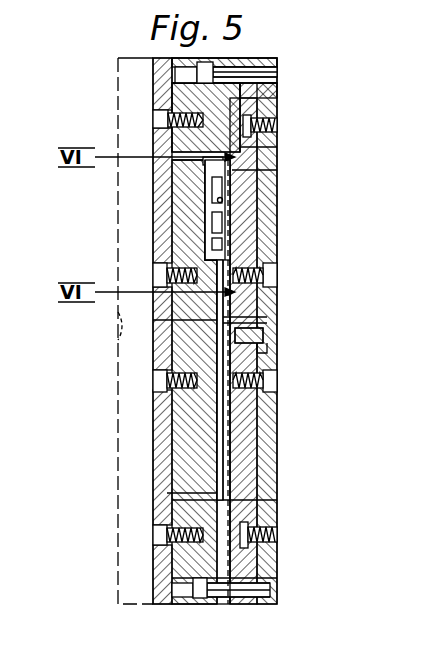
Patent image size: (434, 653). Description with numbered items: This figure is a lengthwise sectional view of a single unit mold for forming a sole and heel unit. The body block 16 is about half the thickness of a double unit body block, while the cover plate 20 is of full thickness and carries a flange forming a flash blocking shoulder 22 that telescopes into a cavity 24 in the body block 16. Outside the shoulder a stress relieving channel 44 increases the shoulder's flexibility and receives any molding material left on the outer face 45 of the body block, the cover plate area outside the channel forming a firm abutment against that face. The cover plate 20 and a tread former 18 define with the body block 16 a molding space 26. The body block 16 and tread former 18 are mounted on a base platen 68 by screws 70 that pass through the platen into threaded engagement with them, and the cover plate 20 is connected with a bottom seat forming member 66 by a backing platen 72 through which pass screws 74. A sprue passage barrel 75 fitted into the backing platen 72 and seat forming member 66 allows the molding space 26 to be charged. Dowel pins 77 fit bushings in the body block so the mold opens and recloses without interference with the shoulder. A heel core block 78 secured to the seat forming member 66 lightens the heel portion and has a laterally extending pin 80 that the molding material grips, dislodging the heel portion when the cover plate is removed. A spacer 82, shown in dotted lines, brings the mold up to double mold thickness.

The body block 16 is at (160, 86).
The tread former 18 is at (170, 182).
The cover plate 20 is at (240, 60).
The flash blocking shoulder 22 is at (170, 491).
The cavity 24 is at (277, 170).
The molding space 26 is at (153, 321).
The stress relieving channel 44 is at (277, 148).
The outer face 45 is at (262, 88).
The bottom seat forming member 66 is at (245, 448).
The base platen 68 is at (152, 558).
The screws 70 is at (165, 117).
The backing platen 72 is at (270, 424).
The screws 74 is at (275, 122).
The sprue passage barrel 75 is at (275, 346).
The dowel pins 77 is at (277, 71).
The heel core block 78 is at (212, 192).
The pin 80 is at (223, 200).
The spacer 82 is at (118, 380).